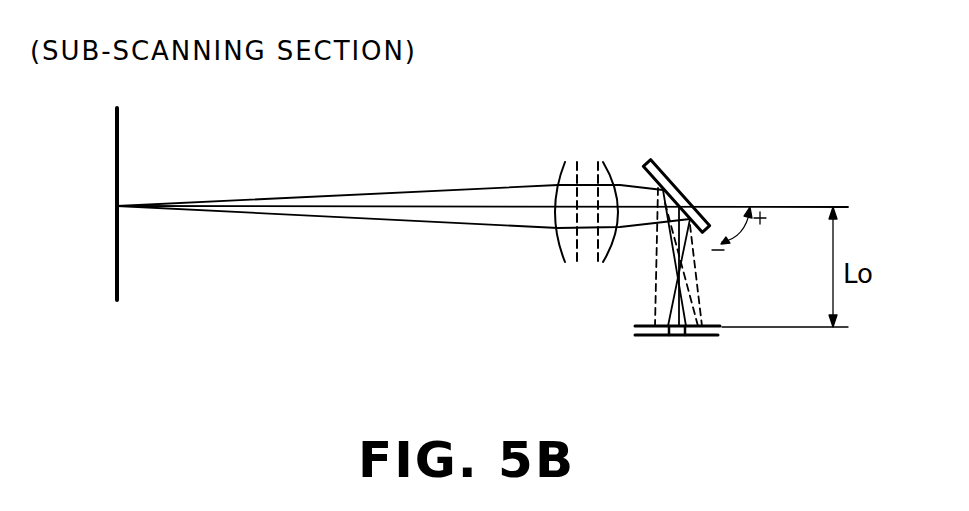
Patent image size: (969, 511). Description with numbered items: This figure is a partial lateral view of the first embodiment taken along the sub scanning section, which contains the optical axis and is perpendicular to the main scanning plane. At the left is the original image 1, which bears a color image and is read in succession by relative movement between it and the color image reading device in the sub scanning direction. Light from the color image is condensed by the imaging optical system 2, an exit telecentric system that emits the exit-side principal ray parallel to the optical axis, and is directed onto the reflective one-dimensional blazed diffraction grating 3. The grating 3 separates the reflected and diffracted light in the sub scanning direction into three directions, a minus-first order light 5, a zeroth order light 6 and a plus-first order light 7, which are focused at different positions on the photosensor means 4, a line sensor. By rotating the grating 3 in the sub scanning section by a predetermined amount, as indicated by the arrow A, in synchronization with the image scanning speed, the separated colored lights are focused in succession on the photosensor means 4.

The original image 1 is at (117, 133).
The imaging optical system 2 is at (546, 270).
The reflective one-dimensional blazed diffraction grating 3 is at (667, 178).
The photosensor means 4 is at (682, 337).
The −1st order light 5 is at (657, 292).
The 0-th order light 6 is at (668, 328).
The +1st order light 7 is at (693, 288).
The arrow indicating rotation of the diffraction grating A is at (738, 230).